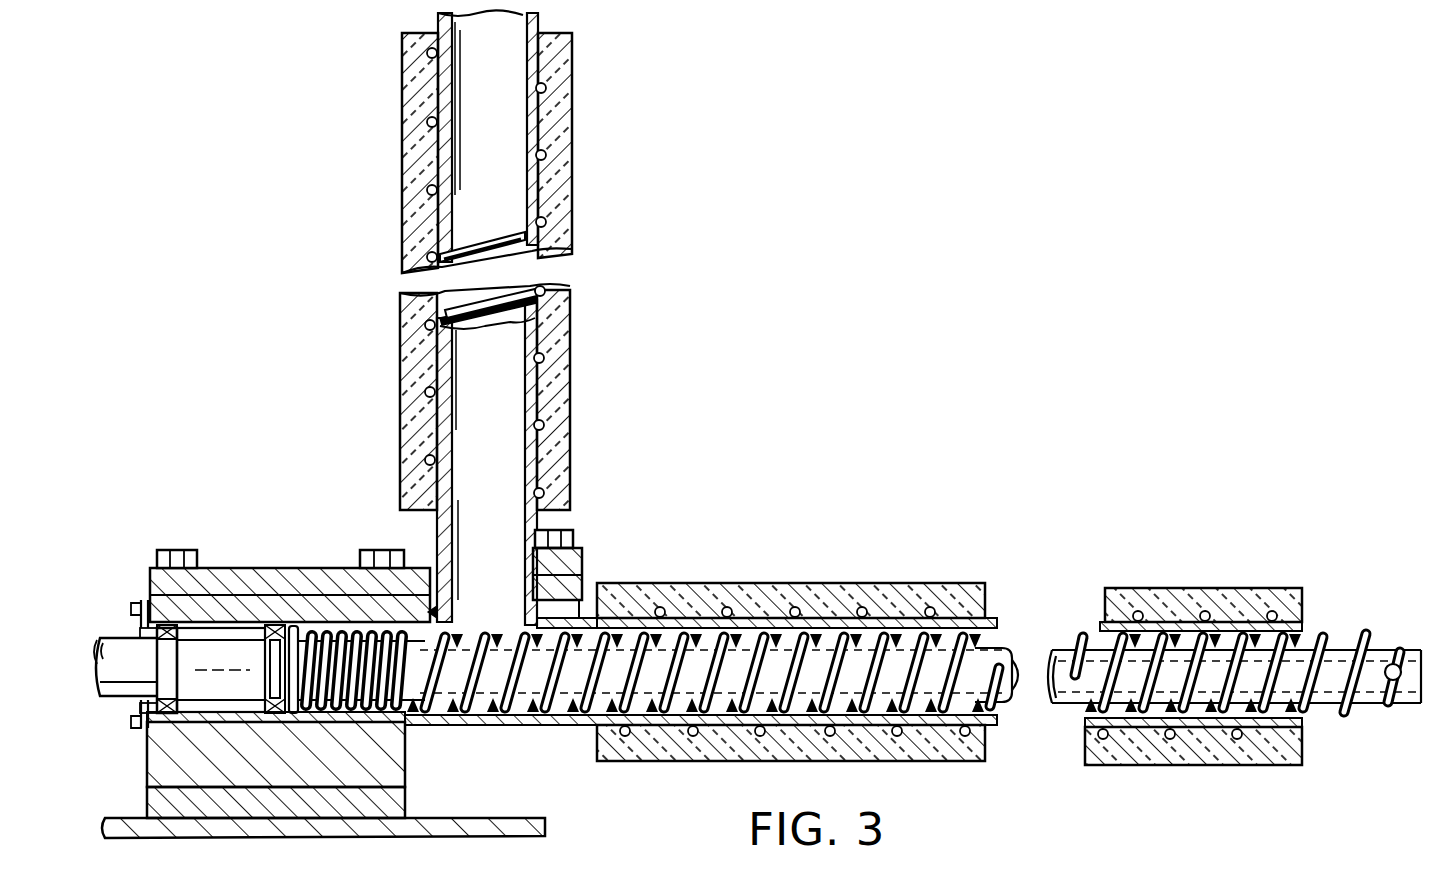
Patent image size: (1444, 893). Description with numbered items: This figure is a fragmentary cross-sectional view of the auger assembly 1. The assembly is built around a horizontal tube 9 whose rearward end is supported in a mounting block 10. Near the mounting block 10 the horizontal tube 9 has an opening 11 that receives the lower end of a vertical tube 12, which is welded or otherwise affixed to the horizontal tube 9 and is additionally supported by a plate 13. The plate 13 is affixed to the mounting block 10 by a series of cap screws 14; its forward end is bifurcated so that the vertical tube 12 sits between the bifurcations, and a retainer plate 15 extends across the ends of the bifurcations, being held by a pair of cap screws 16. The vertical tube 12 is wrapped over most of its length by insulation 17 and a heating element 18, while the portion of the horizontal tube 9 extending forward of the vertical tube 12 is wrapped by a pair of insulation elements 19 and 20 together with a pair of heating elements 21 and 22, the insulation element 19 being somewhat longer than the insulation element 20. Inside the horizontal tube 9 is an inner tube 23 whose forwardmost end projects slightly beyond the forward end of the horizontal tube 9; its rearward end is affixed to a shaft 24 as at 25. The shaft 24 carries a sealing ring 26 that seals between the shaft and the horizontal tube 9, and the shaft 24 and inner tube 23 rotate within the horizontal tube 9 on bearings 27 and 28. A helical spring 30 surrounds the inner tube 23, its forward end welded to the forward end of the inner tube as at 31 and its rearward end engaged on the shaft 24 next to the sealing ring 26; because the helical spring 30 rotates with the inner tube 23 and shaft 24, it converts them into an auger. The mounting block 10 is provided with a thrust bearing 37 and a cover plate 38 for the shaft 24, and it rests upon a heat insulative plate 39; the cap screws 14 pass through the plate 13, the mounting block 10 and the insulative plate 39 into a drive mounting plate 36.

The auger assembly 1 is at (812, 578).
The horizontal tube 9 is at (990, 730).
The mounting block 10 is at (405, 752).
The opening 11 is at (445, 612).
The vertical tube 12 is at (436, 522).
The plate 13 is at (208, 568).
The cap screws 14 is at (160, 551).
The retainer plate 15 is at (575, 557).
The cap screws 16 is at (560, 540).
The insulation 17 is at (560, 80).
The heating element 18 is at (547, 152).
The insulation element 19 is at (778, 585).
The insulation element 20 is at (1172, 588).
The heating element 21 is at (662, 606).
The heating element 22 is at (1270, 610).
The inner tube 23 is at (1370, 690).
The shaft 24 is at (143, 671).
The affixing location 25 is at (595, 728).
The sealing ring 26 is at (292, 612).
The bearing 27 is at (278, 620).
The bearing 28 is at (172, 624).
The helical spring 30 is at (1322, 636).
The weld 31 is at (1393, 660).
The drive mounting plate 36 is at (492, 826).
The thrust bearing 37 is at (150, 630).
The cover plate 38 is at (148, 710).
The heat insulative plate 39 is at (400, 810).